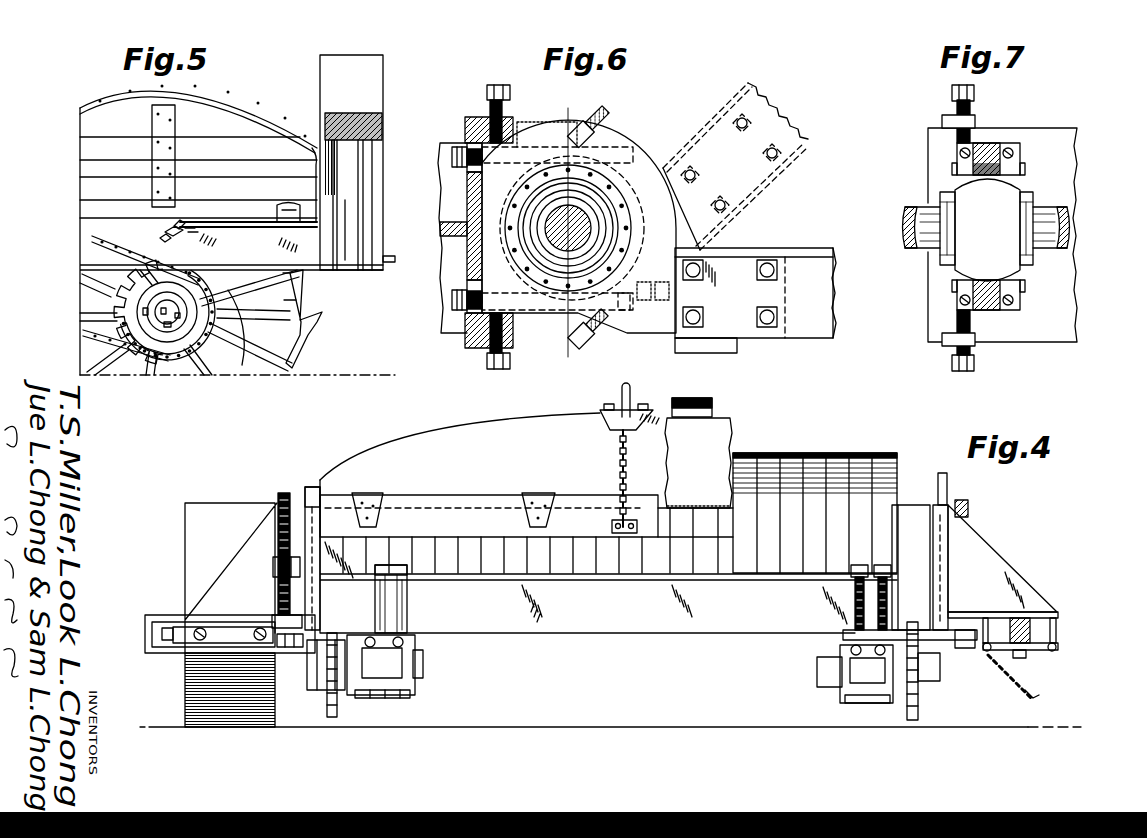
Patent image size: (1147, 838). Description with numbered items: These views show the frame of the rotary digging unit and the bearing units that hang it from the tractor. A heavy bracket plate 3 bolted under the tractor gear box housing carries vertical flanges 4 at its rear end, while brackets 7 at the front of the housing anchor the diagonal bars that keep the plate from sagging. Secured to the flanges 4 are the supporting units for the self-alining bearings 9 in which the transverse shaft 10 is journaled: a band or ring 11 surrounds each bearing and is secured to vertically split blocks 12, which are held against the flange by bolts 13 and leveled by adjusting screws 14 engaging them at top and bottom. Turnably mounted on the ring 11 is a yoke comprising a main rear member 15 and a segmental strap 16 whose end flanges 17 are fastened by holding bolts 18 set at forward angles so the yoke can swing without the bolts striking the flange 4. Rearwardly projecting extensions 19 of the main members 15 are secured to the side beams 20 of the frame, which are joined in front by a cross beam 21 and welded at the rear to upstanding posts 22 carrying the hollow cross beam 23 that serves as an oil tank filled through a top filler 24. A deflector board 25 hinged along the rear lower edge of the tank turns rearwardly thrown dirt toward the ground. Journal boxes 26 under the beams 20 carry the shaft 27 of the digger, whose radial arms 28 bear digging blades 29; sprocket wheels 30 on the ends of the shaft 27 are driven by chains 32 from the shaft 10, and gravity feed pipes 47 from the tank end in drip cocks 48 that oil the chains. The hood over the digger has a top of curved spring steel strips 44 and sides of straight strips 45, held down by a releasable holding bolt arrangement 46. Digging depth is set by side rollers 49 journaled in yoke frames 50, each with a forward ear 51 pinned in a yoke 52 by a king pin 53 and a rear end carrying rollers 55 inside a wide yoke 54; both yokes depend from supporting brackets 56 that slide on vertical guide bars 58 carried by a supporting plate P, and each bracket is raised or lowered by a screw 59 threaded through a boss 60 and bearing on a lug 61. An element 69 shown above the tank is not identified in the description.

In FIG. 6, the bracket plate 3 is at (450, 232).
In FIG. 6, the vertical flanges 4 is at (462, 257).
In FIG. 7, the vertical flanges 4 is at (1055, 320).
In FIG. 6, the brackets 7 is at (566, 231).
In FIG. 6, the self-alining bearings 9 is at (690, 183).
In FIG. 7, the self-alining bearings 9 is at (1000, 207).
In FIG. 6, the transverse shaft 10 is at (556, 222).
In FIG. 7, the transverse shaft 10 is at (920, 230).
In FIG. 6, the band or ring 11 is at (603, 222).
In FIG. 7, the band or ring 11 is at (985, 310).
In FIG. 6, the blocks 12 is at (505, 300).
In FIG. 7, the blocks 12 is at (1005, 286).
In FIG. 6, the bolts 13 is at (470, 300).
In FIG. 7, the bolts 13 is at (963, 154).
In FIG. 6, the adjusting screws 14 is at (490, 105).
In FIG. 7, the adjusting screws 14 is at (958, 322).
In FIG. 6, the main rear member 15 is at (660, 225).
In FIG. 6, the segmental strap 16 is at (497, 198).
In FIG. 7, the segmental strap 16 is at (990, 145).
In FIG. 6, the end flanges 17 is at (585, 160).
In FIG. 6, the holding bolts 18 is at (596, 336).
In FIG. 6, the rearwardly projecting extensions 19 is at (665, 330).
In FIG. 5, the side beams 20 is at (88, 258).
In FIG. 6, the side beams 20 is at (800, 265).
In FIG. 4, the side beams 20 is at (880, 612).
In FIG. 4, the cross beam 21 is at (530, 615).
In FIG. 4, the upstanding posts 22 is at (355, 603).
In FIG. 5, the hollow cross beam 23 is at (375, 118).
In FIG. 4, the hollow cross beam 23 is at (718, 445).
In FIG. 4, the top filler 24 is at (712, 405).
In FIG. 4, the deflector board 25 is at (582, 520).
In FIG. 4, the journal boxes 26 is at (405, 688).
In FIG. 5, the shaft 27 is at (166, 318).
In FIG. 4, the shaft 27 is at (425, 672).
In FIG. 5, the radial arms 28 is at (232, 350).
In FIG. 5, the digging blades 29 is at (315, 312).
In FIG. 5, the sprocket wheels 30 is at (158, 333).
In FIG. 4, the sprocket wheels 30 is at (334, 717).
In FIG. 5, the chains 32 is at (88, 335).
In FIG. 5, the strips 44 is at (110, 99).
In FIG. 4, the strips 44 is at (840, 453).
In FIG. 5, the straight strips 45 is at (100, 157).
In FIG. 4, the straight strips 45 is at (885, 477).
In FIG. 5, the releasable holding bolt arrangement 46 is at (282, 205).
In FIG. 5, the gravity feed pipes 47 is at (246, 228).
In FIG. 5, the drip cocks 48 is at (150, 247).
In FIG. 5, the side wheels or rollers 49 is at (213, 347).
In FIG. 4, the side wheels or rollers 49 is at (205, 727).
In FIG. 4, the yoke frames 50 is at (215, 630).
In FIG. 4, the ear or extension 51 is at (1025, 620).
In FIG. 4, the yoke 52 is at (1055, 640).
In FIG. 4, the bolt or king pin 53 is at (1027, 653).
In FIG. 4, the yoke 54 is at (148, 637).
In FIG. 4, the rollers 55 is at (243, 645).
In FIG. 4, the supporting brackets 56 is at (235, 585).
In FIG. 5, the guide bars 58 is at (377, 183).
In FIG. 4, the guide bars 58 is at (308, 490).
In FIG. 4, the screw 59 is at (280, 515).
In FIG. 4, the boss 60 is at (292, 567).
In FIG. 4, the lug 61 is at (940, 636).
In FIG. 4, the pin 69 is at (620, 392).
In FIG. 5, the supporting plate P is at (365, 222).